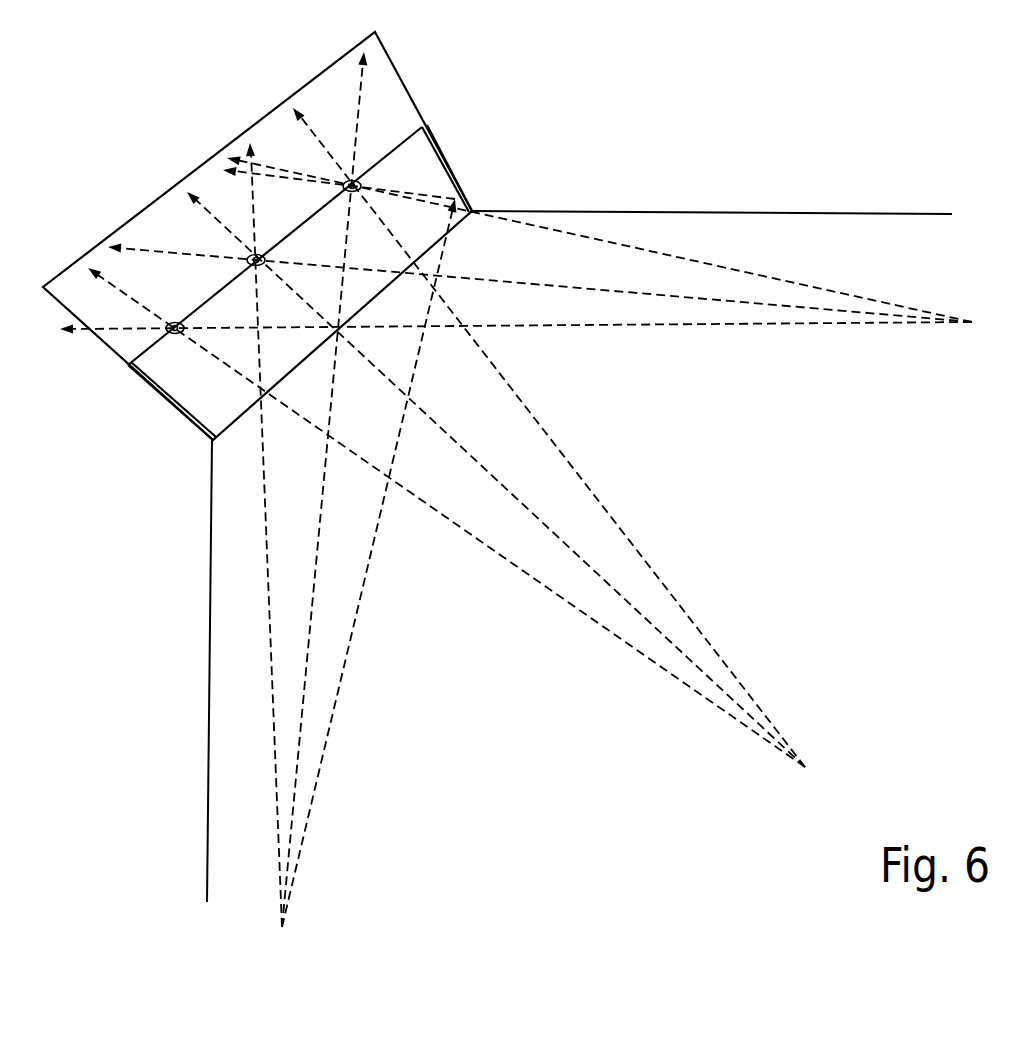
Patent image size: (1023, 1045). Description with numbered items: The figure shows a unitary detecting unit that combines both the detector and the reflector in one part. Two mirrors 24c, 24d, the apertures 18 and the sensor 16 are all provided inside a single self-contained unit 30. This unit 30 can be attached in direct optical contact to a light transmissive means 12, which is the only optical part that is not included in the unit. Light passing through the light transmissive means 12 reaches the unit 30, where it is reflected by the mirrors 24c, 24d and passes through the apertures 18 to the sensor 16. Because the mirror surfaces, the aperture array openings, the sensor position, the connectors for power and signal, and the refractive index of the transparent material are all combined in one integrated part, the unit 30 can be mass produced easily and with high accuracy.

The sensor 16 is at (248, 118).
The apertures 18 is at (121, 371).
The mirror 24c is at (459, 165).
The mirror 24d is at (179, 420).
The self-contained unit 30 is at (262, 190).
The light transmissive means 12 is at (667, 790).